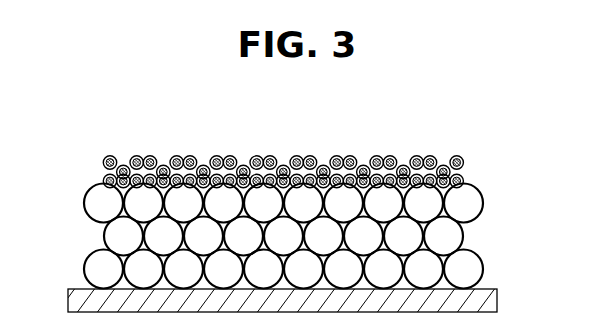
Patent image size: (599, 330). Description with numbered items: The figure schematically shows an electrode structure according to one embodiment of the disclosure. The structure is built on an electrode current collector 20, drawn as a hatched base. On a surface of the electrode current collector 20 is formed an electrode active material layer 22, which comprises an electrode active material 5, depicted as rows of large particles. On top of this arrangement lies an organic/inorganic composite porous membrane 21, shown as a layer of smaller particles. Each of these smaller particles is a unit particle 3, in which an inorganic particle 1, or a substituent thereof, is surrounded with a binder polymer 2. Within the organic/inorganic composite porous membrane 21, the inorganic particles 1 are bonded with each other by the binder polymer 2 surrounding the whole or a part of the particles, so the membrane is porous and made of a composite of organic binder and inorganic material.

The inorganic particle 1 is at (452, 157).
The binder polymer 2 is at (457, 158).
The unit particle 3 is at (460, 143).
The electrode active material 5 is at (85, 203).
The electrode current collector 20 is at (497, 296).
The organic/inorganic composite porous membrane 21 is at (321, 153).
The electrode active material layer 22 is at (296, 236).